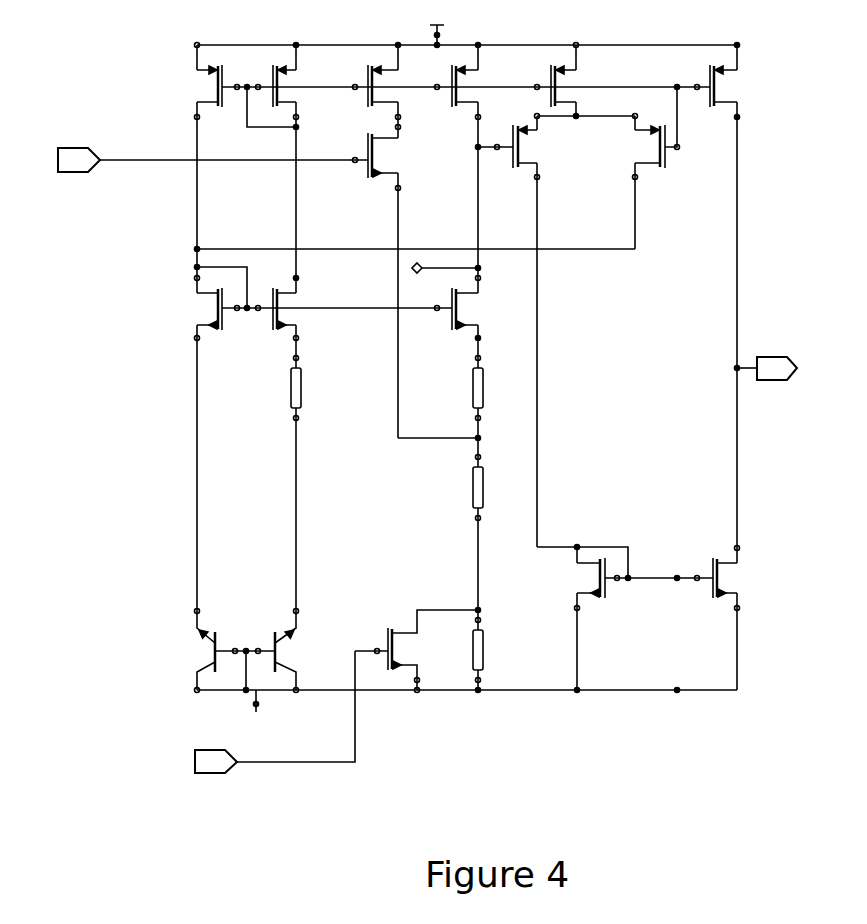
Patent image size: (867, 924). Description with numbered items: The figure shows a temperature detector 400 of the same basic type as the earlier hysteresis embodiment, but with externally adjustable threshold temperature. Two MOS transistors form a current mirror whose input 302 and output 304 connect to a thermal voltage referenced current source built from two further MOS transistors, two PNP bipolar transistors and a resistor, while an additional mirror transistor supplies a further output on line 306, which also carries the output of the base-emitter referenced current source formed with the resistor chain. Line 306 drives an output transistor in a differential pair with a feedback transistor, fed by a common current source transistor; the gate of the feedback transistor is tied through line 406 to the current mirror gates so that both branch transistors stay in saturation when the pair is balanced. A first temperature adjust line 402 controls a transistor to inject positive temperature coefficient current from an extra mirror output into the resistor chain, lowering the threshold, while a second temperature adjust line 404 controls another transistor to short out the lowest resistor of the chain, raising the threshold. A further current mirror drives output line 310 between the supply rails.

The temperature detector 400 is at (197, 842).
The first temperature adjust line 402 is at (67, 147).
The second temperature adjust line 404 is at (207, 752).
The current mirror input 302 is at (297, 207).
The current mirror output 304 is at (197, 207).
The additional current mirror output line 306 is at (478, 206).
The output line 310 is at (776, 355).
The bias voltage line 406 is at (622, 82).